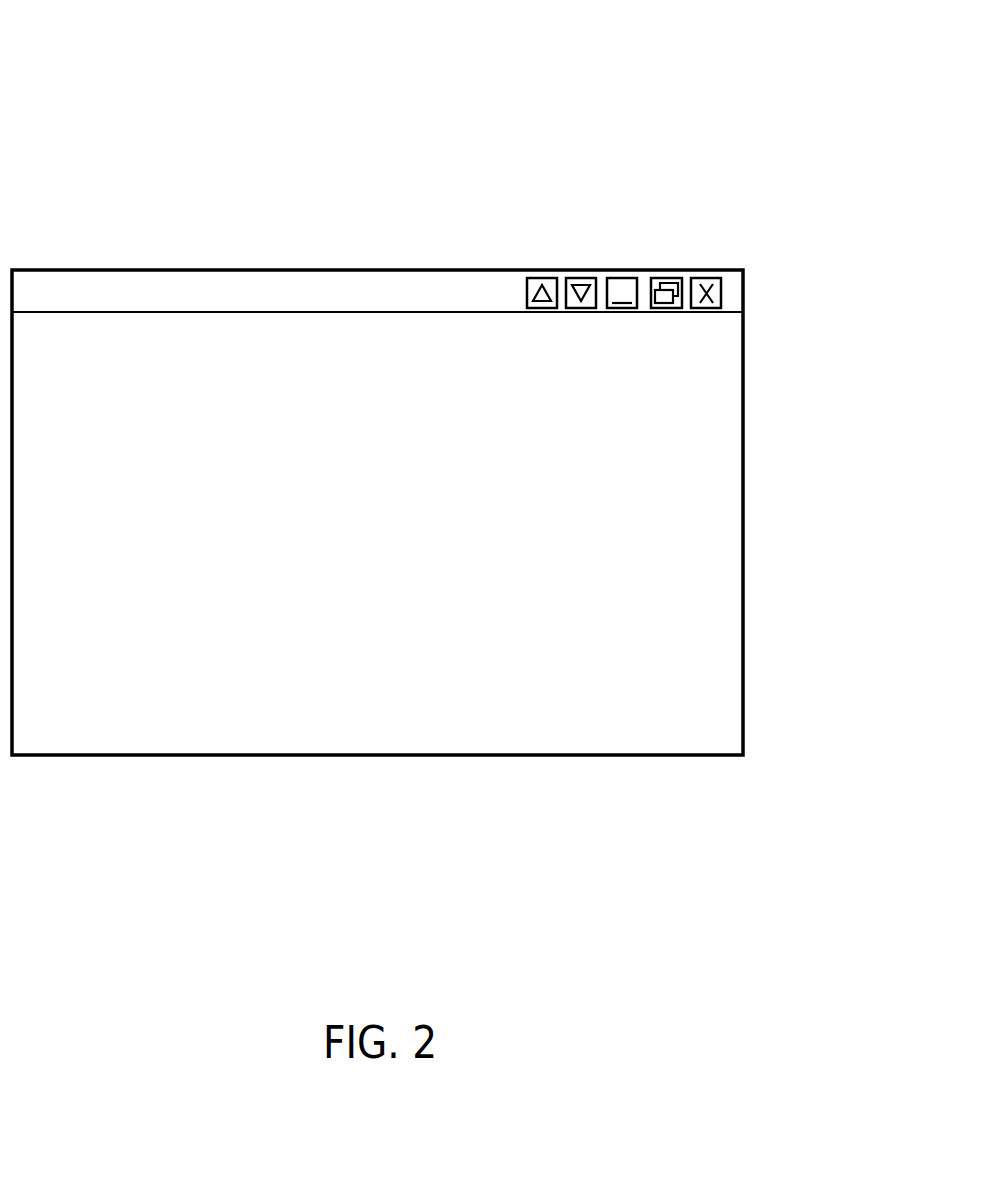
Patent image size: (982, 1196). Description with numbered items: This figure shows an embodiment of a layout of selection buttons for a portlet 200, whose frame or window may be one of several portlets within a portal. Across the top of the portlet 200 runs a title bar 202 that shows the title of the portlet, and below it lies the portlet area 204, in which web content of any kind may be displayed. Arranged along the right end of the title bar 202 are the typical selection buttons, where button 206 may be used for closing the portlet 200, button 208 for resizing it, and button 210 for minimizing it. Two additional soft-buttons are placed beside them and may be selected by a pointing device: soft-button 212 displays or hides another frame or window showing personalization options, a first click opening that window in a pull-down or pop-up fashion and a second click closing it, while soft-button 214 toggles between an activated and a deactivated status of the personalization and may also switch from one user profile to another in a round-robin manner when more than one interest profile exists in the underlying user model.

The portlet 200 is at (163, 84).
The title bar 202 is at (44, 278).
The portlet area 204 is at (80, 673).
The button 206 is at (713, 260).
The button 208 is at (665, 260).
The button 210 is at (623, 260).
The soft-button 212 is at (578, 260).
The soft-button 214 is at (537, 260).